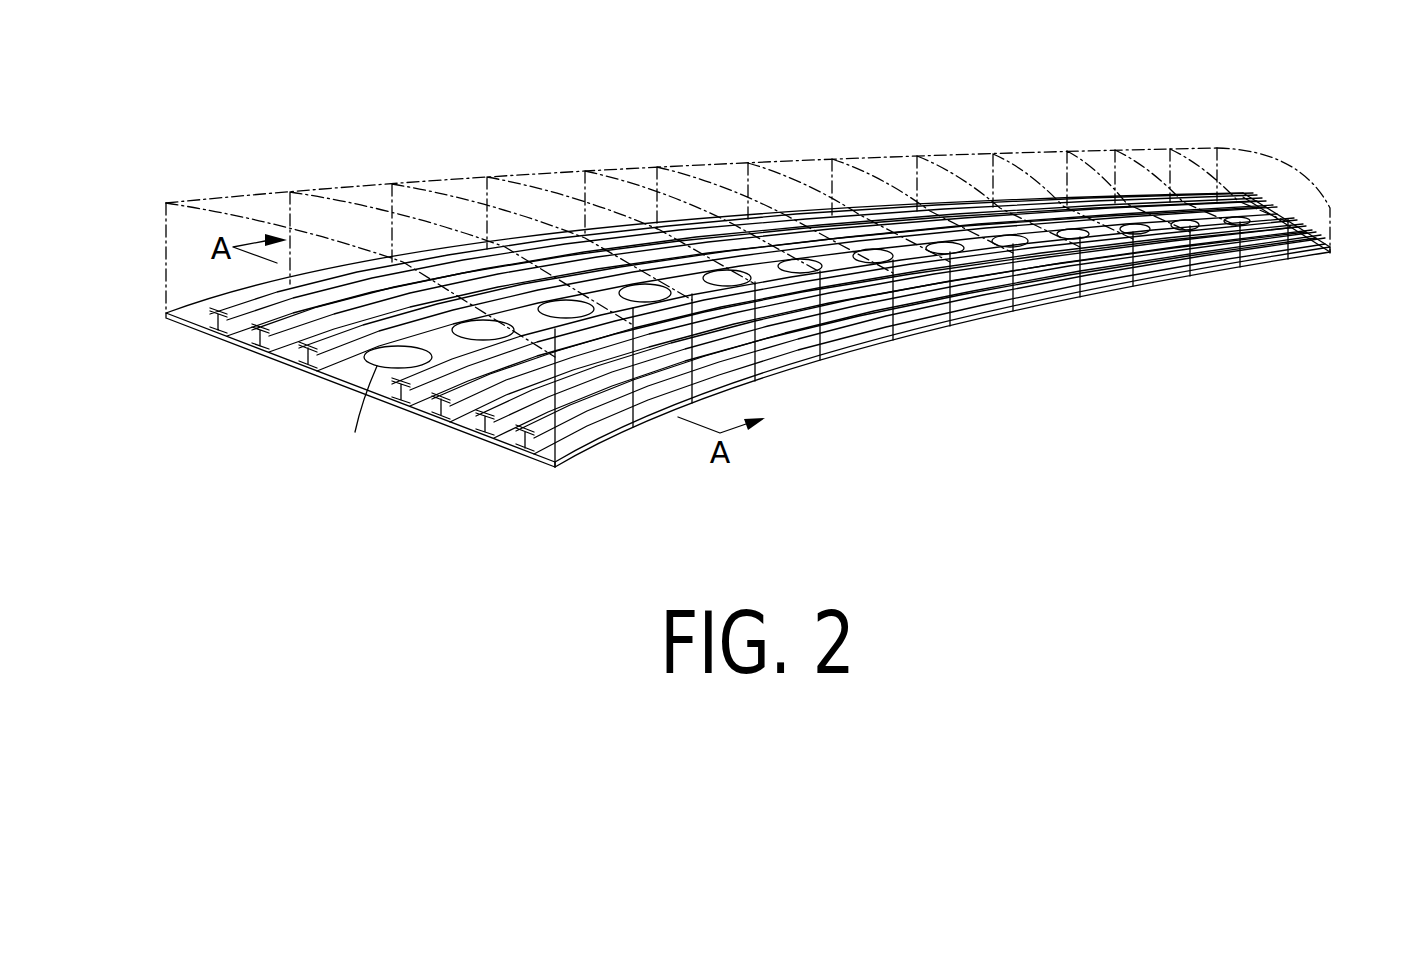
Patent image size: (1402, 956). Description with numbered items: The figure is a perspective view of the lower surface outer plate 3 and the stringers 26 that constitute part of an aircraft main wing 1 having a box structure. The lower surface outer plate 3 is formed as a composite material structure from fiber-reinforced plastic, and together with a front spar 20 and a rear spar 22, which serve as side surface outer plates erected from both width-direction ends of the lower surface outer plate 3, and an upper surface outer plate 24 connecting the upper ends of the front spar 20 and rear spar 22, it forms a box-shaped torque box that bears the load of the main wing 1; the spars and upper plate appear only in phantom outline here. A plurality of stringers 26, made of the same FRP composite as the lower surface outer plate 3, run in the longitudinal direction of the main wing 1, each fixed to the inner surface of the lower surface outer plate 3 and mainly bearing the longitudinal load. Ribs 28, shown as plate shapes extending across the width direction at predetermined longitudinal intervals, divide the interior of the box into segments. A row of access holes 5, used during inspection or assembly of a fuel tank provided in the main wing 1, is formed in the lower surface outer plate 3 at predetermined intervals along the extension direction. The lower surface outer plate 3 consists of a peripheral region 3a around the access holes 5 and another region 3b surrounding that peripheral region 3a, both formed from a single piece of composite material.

The main wing 1 is at (622, 115).
The lower surface outer plate 3 is at (312, 482).
The peripheral region 3a is at (354, 412).
The another region 3b is at (208, 333).
The access hole 5 is at (383, 363).
The front spar 20 is at (166, 243).
The rear spar 22 is at (612, 428).
The upper surface outer plate 24 is at (278, 205).
The stringer 26 is at (408, 392).
The rib 28 is at (348, 212).